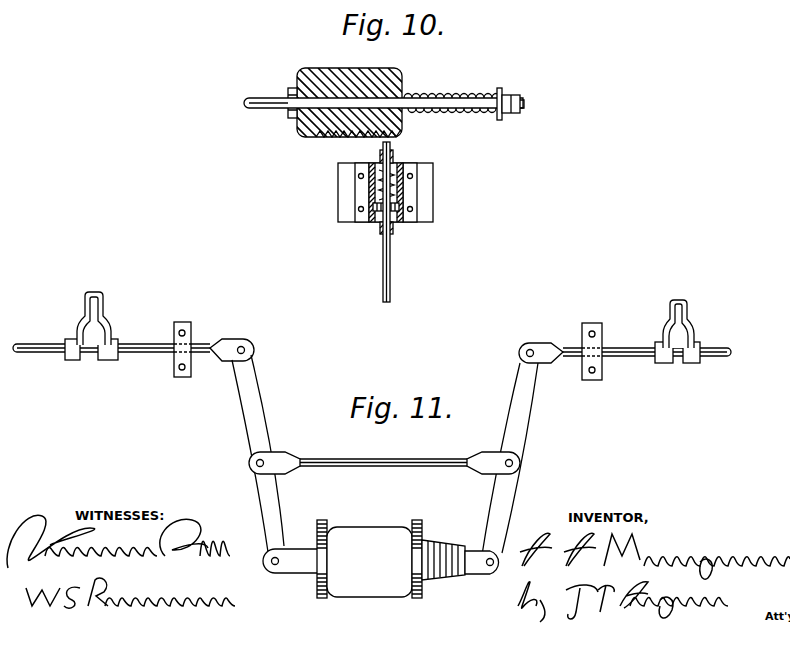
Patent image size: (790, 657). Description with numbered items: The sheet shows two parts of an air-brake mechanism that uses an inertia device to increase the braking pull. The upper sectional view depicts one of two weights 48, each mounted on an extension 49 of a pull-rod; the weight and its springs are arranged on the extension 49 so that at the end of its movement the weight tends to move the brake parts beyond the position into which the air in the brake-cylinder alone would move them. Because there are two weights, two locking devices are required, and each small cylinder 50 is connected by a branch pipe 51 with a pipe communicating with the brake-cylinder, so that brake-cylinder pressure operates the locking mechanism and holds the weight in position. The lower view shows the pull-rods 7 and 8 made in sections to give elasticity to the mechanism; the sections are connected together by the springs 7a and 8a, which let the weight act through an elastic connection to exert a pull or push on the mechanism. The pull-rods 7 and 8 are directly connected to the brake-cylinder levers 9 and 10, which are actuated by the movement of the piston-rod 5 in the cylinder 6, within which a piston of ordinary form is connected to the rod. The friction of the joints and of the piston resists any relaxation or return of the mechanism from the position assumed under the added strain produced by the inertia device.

In FIG. 10, the weight 48 is at (303, 130).
In FIG. 10, the extension of the pull-rod 49 is at (460, 104).
In FIG. 10, the small cylinder 50 is at (418, 198).
In FIG. 10, the branch pipe 51 is at (390, 262).
In FIG. 11, the piston-rod 5 is at (474, 575).
In FIG. 11, the cylinder 6 is at (391, 559).
In FIG. 11, the pull-rod 7 is at (572, 348).
In FIG. 11, the spring 7a is at (669, 316).
In FIG. 11, the pull-rod 8 is at (212, 344).
In FIG. 11, the spring 8a is at (104, 307).
In FIG. 11, the brake-cylinder lever 9 is at (511, 497).
In FIG. 11, the brake-cylinder lever 10 is at (258, 500).